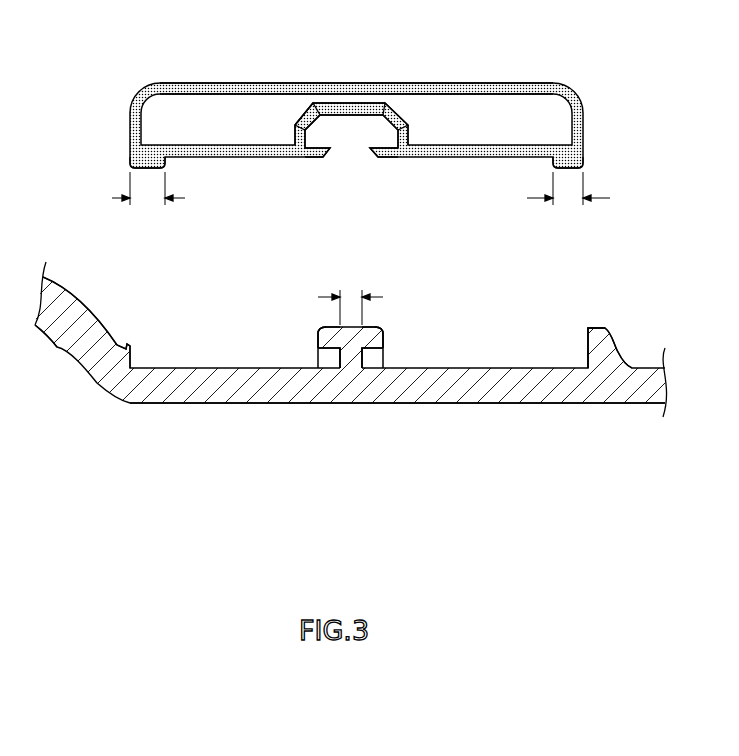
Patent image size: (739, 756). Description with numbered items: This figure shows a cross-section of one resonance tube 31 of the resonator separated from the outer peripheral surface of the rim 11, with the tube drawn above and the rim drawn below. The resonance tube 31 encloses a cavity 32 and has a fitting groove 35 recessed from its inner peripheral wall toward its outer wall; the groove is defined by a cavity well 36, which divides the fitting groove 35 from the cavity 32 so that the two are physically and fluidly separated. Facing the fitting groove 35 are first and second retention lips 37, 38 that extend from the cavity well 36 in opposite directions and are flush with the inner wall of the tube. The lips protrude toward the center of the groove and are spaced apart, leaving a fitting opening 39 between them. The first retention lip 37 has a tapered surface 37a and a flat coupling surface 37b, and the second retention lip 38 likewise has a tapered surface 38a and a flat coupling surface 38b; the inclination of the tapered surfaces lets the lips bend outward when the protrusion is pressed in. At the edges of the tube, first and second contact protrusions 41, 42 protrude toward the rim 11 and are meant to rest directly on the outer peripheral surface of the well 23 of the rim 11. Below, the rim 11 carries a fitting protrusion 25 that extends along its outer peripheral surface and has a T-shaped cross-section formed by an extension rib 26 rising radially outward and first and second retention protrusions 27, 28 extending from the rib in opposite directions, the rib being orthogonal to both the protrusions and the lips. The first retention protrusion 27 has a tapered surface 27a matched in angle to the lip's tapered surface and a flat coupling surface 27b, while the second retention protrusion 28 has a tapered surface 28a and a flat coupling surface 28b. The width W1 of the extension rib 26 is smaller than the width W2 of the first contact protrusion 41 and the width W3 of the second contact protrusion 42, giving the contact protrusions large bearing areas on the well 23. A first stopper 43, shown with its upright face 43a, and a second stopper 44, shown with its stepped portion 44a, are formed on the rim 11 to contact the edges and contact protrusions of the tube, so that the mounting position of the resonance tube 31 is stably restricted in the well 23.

The rim 11 is at (229, 404).
The well 23 is at (318, 390).
The fitting protrusion 25 is at (425, 312).
The extension rib 26 is at (352, 355).
The first retention protrusion 27 is at (375, 330).
The tapered surface 27a is at (380, 336).
The coupling surface 27b is at (380, 352).
The second retention protrusion 28 is at (328, 330).
The tapered surface 28a is at (322, 336).
The coupling surface 28b is at (320, 352).
The resonance tube 31 is at (488, 68).
The cavity 32 is at (208, 105).
The fitting groove 35 is at (358, 126).
The cavity well 36 is at (293, 115).
The first retention lip 37 is at (390, 158).
The tapered surface 37a is at (376, 158).
The coupling surface 37b is at (390, 122).
The second retention lip 38 is at (310, 158).
The tapered surface 38a is at (323, 158).
The coupling surface 38b is at (312, 122).
The fitting opening 39 is at (353, 151).
The first contact protrusion 41 is at (583, 150).
The second contact protrusion 42 is at (130, 150).
The first stopper 43 is at (605, 330).
The stopper vertical face 43a is at (588, 345).
The second stopper 44 is at (118, 348).
The curved wall step 44a is at (130, 352).
The width of the extension rib W1 is at (350, 295).
The width of the first contact protrusion W2 is at (148, 200).
The width of the second contact protrusion W3 is at (568, 200).